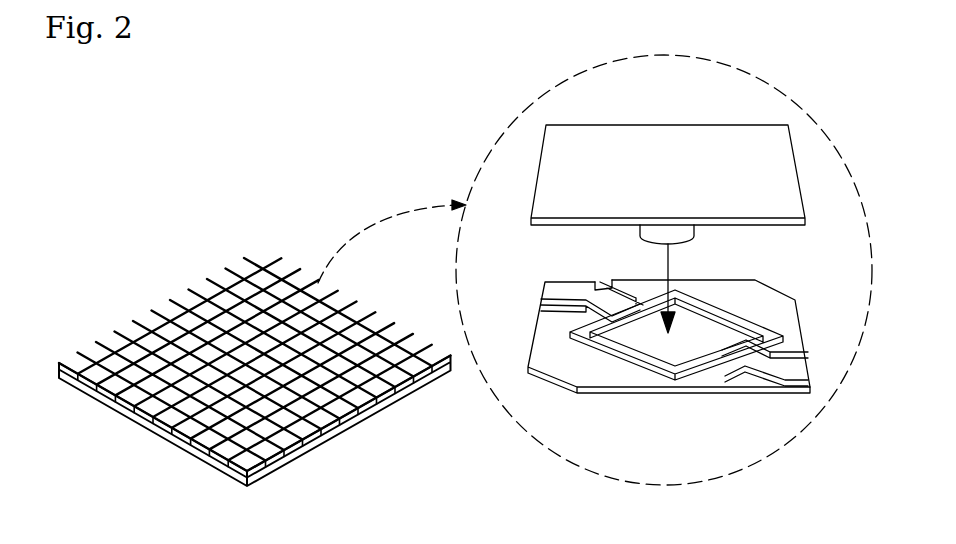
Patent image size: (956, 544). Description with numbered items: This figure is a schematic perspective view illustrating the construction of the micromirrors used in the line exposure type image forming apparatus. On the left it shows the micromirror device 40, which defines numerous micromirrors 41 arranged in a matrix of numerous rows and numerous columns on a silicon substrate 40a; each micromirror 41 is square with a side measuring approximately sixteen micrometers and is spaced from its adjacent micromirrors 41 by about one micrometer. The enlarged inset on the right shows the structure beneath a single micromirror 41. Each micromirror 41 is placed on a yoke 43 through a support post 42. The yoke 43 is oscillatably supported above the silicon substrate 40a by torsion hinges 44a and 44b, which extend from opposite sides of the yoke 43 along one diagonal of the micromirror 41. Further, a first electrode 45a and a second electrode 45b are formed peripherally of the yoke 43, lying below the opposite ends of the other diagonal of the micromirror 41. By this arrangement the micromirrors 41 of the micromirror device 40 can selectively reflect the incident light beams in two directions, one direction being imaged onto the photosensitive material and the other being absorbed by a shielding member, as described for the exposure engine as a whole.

The micromirror device 40 is at (255, 342).
The silicon substrate 40a is at (305, 448).
The micromirror 41 is at (292, 298).
The support post 42 is at (683, 236).
The yoke 43 is at (685, 352).
The torsion hinge 44a is at (570, 287).
The torsion hinge 44b is at (787, 373).
The first electrode 45a is at (607, 368).
The second electrode 45b is at (768, 302).